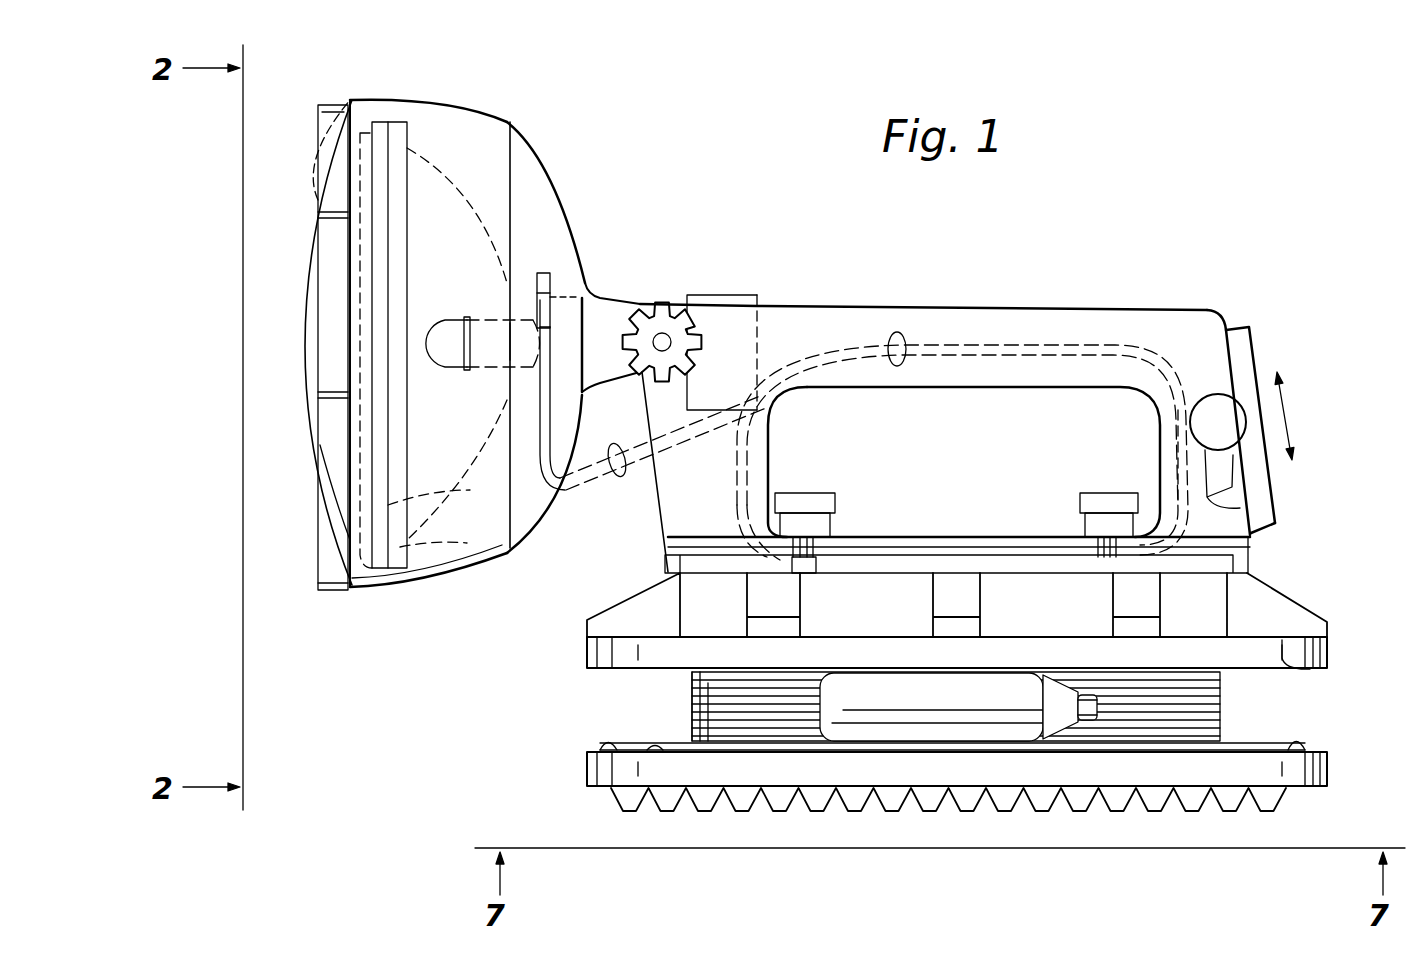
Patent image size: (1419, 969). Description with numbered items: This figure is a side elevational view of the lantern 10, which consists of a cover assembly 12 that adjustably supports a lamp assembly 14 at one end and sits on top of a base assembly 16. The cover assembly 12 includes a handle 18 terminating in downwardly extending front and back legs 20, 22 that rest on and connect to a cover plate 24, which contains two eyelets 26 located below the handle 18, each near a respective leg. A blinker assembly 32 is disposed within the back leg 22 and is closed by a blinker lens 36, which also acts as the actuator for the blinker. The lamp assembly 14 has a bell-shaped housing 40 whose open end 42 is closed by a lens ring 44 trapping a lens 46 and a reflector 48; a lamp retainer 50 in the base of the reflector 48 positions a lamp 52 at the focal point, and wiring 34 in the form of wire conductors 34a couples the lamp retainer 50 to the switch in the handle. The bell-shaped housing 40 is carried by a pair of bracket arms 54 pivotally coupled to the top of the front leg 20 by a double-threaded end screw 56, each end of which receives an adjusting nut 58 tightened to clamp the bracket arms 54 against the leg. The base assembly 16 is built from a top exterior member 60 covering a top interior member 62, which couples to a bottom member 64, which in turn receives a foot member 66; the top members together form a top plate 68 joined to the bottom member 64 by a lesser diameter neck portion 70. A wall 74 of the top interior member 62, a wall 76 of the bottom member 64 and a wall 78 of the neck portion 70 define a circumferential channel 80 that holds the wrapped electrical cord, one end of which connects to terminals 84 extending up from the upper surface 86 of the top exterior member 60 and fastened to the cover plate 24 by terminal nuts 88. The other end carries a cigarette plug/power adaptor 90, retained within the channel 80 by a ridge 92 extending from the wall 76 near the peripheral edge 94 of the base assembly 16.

The lantern 10 is at (1156, 243).
The cover assembly 12 is at (1141, 306).
The lamp assembly 14 is at (560, 152).
The base assembly 16 is at (572, 685).
The handle 18 is at (1027, 330).
The front leg 20 is at (769, 458).
The back leg 22 is at (1188, 421).
The cover plate 24 is at (950, 547).
The eyelets 26 is at (800, 560).
The blinker assembly 32 is at (1260, 336).
The electrical cord 34 is at (900, 330).
The wire conductors 34a is at (614, 477).
The blinker lens 36 is at (1243, 326).
The bell-shaped housing 40 is at (548, 218).
The open end 42 is at (351, 97).
The lens ring 44 is at (330, 103).
The lens 46 is at (310, 302).
The reflector 48 is at (430, 200).
The lamp retainer 50 is at (537, 300).
The lamp 52 is at (487, 353).
The bracket arms 54 is at (603, 300).
The double-threaded end screw 56 is at (664, 332).
The adjusting nut 58 is at (656, 300).
The top exterior member 60 is at (1290, 578).
The top interior member 62 is at (1285, 668).
The bottom member 64 is at (1303, 738).
The foot member 66 is at (1225, 804).
The top plate 68 is at (1297, 645).
The neck portion 70 is at (1237, 706).
The wall 74 is at (680, 672).
The wall 76 is at (593, 756).
The wall 78 is at (700, 701).
The channel 80 is at (609, 706).
The terminals 84 is at (813, 567).
The upper surface 86 is at (680, 555).
The terminal nut 88 is at (817, 492).
The cigarette plug/power adaptor 90 is at (958, 707).
The ridge 92 is at (660, 748).
The peripheral edge 94 is at (587, 770).